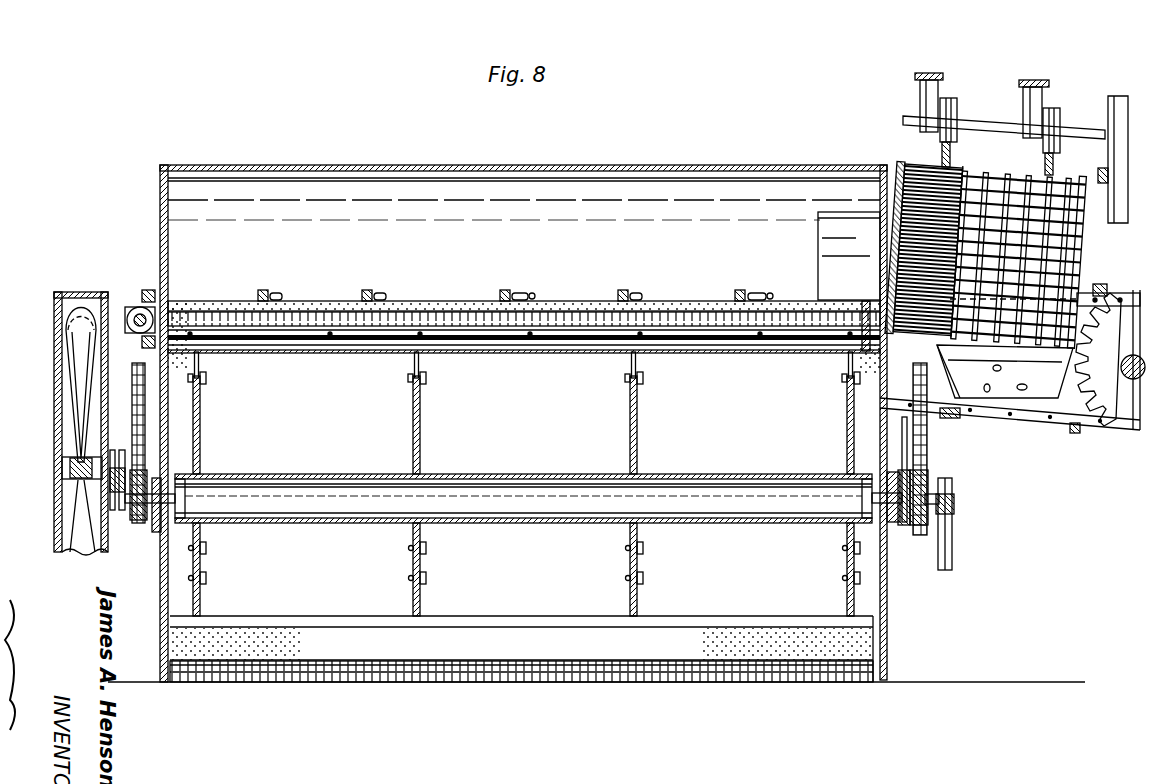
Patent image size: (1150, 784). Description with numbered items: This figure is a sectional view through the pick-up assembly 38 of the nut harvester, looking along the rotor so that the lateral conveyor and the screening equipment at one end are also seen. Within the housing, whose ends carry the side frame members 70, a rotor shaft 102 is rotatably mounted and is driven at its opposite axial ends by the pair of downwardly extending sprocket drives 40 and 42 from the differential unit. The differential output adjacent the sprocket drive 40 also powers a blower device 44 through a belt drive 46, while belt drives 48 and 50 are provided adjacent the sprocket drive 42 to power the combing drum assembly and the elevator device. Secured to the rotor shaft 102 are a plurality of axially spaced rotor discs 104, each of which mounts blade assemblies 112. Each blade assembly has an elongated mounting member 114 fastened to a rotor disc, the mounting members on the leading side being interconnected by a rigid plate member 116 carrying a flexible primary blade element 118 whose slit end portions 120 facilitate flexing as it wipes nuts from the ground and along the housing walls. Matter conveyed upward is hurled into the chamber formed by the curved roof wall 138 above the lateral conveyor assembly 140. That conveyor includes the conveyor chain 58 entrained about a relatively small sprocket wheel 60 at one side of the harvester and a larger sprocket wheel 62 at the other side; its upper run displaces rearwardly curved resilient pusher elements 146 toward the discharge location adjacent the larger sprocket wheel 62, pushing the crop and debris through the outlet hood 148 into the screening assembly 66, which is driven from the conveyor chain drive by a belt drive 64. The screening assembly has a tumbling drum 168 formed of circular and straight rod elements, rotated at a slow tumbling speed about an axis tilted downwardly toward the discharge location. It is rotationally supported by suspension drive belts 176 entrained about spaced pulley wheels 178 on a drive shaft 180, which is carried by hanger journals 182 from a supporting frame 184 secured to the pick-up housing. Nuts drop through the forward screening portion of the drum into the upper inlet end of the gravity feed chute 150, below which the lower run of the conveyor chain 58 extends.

The pick-up assembly 38 is at (346, 604).
The sprocket drive 40 is at (146, 428).
The sprocket drive 42 is at (920, 430).
The blower device 44 is at (50, 392).
The belt drive 46 is at (118, 520).
The belt drive 48 is at (904, 435).
The belt drive 50 is at (948, 550).
The conveyor chain 58 is at (1018, 412).
The sprocket wheel 60 is at (160, 316).
The sprocket wheel 62 is at (1120, 392).
The belt drive 64 is at (1118, 92).
The screening assembly 66 is at (903, 155).
The side frame member 70 is at (892, 522).
The rotor shaft 102 is at (490, 474).
The rotor disc 104 is at (412, 432).
The blade assembly 112 is at (553, 665).
The mounting member 114 is at (638, 570).
The plate member 116 is at (784, 622).
The primary blade element 118 is at (748, 642).
The slit end portion 120 is at (818, 672).
The curved roof wall 138 is at (566, 166).
The lateral conveyor assembly 140 is at (483, 292).
The pusher element 146 is at (742, 290).
The outlet hood 148 is at (833, 238).
The gravity feed chute 150 is at (1046, 400).
The tumbling drum 168 is at (1082, 208).
The suspension drive belt 176 is at (952, 153).
The pulley wheel 178 is at (956, 110).
The drive shaft 180 is at (1076, 128).
The hanger journal 182 is at (1028, 110).
The supporting frame 184 is at (930, 74).